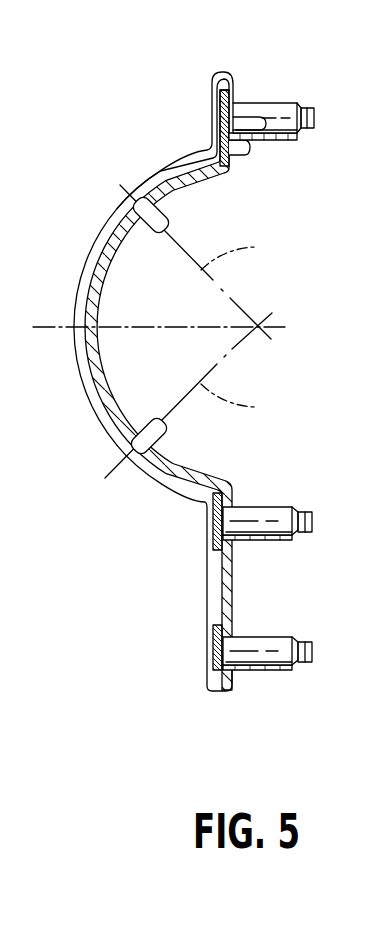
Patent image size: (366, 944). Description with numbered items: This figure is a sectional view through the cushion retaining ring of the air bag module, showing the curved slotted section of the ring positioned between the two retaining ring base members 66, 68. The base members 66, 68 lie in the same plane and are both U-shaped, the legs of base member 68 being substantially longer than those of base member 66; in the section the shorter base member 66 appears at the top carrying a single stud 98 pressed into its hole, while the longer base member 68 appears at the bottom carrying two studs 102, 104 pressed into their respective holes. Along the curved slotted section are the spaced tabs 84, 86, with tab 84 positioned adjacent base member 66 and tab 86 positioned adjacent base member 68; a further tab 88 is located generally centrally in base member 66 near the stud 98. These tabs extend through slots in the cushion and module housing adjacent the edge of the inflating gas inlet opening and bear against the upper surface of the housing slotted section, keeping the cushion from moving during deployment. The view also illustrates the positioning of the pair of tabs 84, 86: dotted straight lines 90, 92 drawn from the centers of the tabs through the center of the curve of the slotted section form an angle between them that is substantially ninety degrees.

The retaining ring base member 66 is at (229, 148).
The retaining ring base member 68 is at (232, 589).
The tab 84 is at (170, 232).
The tab 86 is at (167, 441).
The tab 88 is at (251, 118).
The dotted straight line 90 is at (255, 247).
The dotted straight line 92 is at (255, 407).
The stud 98 is at (216, 106).
The stud 102 is at (207, 653).
The stud 104 is at (212, 528).